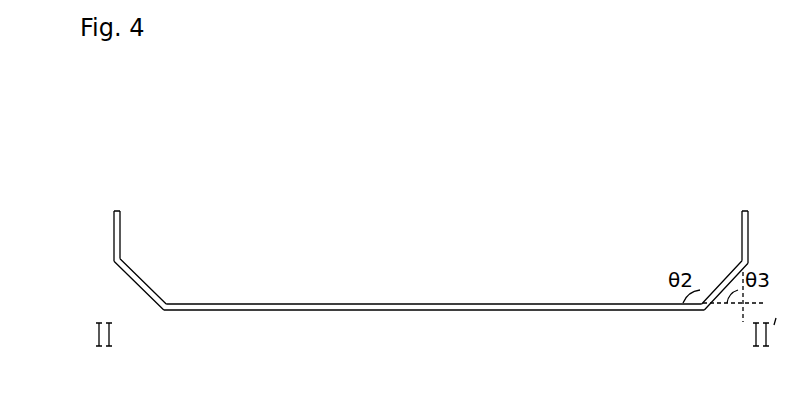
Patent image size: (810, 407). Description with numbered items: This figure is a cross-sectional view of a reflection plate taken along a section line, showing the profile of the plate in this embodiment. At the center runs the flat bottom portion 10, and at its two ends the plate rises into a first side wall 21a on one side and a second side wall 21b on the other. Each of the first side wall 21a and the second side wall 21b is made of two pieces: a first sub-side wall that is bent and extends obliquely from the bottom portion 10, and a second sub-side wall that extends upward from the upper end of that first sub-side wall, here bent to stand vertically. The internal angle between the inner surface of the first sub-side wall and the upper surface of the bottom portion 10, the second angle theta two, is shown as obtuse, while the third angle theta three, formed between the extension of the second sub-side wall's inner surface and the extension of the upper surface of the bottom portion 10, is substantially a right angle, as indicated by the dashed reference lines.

The bottom portion 10 is at (438, 310).
The first side wall 21a is at (704, 216).
The second side wall 21b is at (161, 216).